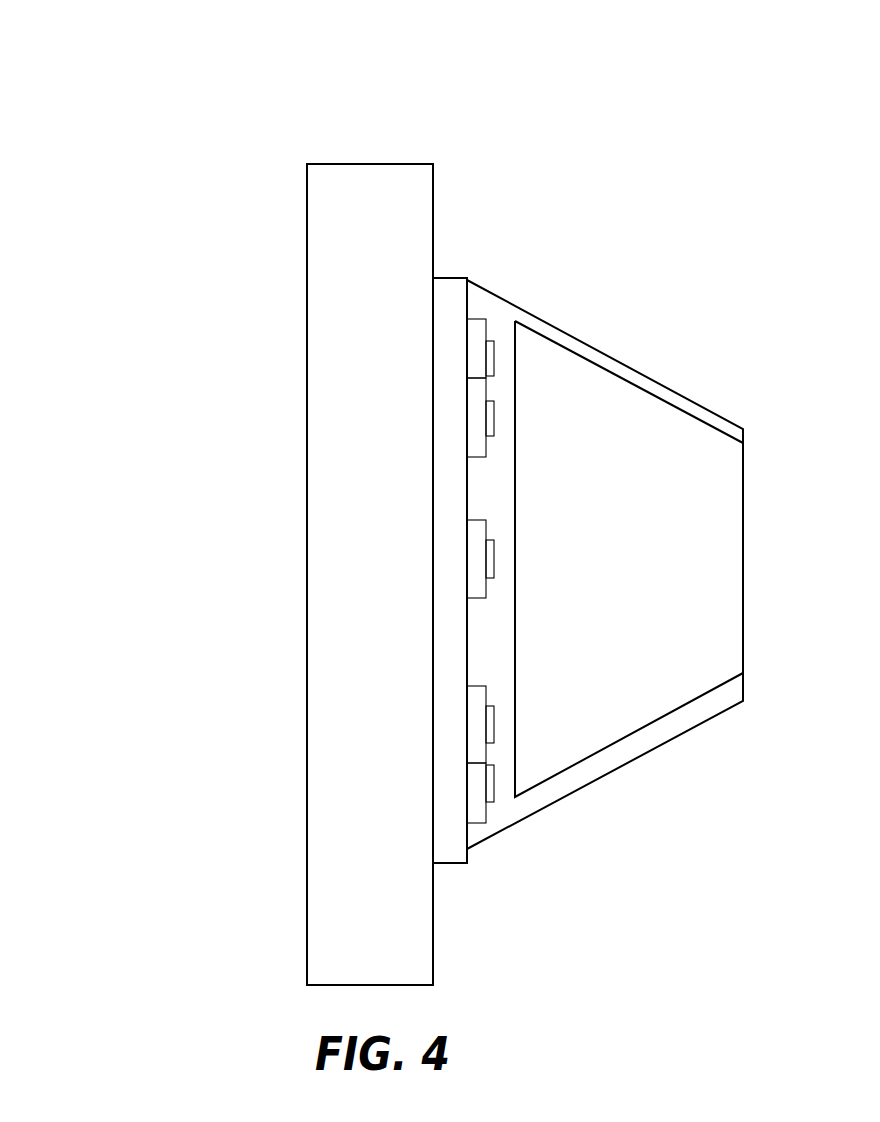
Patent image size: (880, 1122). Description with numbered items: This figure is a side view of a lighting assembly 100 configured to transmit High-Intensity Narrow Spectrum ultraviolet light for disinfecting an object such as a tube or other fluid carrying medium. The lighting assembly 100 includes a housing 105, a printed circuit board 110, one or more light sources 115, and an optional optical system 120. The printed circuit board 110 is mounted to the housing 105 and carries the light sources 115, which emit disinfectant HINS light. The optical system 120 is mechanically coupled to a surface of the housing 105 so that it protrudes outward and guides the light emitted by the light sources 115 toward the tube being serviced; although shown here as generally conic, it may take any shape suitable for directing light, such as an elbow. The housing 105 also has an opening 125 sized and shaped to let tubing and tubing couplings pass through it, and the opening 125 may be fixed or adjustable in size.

The lighting assembly 100 is at (128, 69).
The housing 105 is at (347, 535).
The printed circuit board 110 is at (493, 539).
The light sources 115 is at (636, 571).
The optical system 120 is at (605, 564).
The opening 125 is at (405, 540).